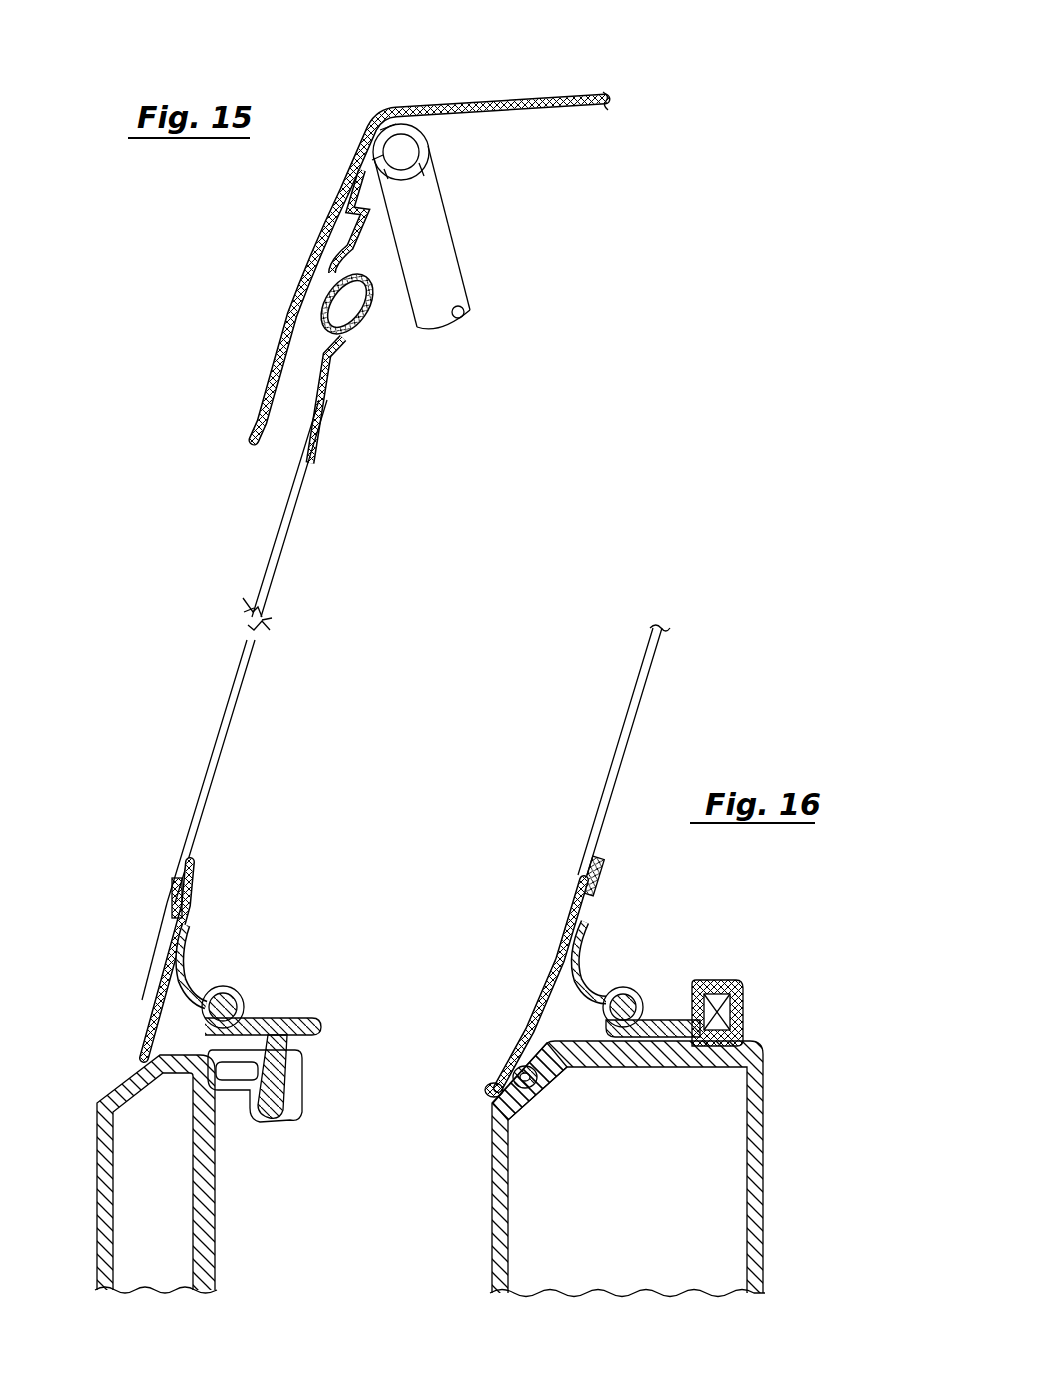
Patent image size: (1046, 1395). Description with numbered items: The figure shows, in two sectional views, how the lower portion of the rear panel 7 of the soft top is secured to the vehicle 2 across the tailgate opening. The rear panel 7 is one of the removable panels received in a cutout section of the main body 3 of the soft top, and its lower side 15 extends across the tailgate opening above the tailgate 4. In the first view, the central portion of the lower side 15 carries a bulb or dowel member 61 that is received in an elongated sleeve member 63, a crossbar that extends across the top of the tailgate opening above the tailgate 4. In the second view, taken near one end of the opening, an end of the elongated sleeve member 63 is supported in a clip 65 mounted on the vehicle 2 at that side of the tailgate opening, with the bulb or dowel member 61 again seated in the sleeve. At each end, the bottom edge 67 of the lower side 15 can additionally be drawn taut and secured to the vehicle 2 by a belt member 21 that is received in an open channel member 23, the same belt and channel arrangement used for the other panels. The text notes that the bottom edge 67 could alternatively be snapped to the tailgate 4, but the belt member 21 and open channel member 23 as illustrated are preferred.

In FIG. 16, the vehicle 2 is at (644, 1205).
In FIG. 15, the main body 3 is at (454, 100).
In FIG. 15, the tailgate 4 is at (97, 1195).
In FIG. 15, the rear panel 7 is at (205, 615).
In FIG. 16, the rear panel 7 is at (590, 766).
In FIG. 15, the lower side 15 is at (153, 993).
In FIG. 16, the lower side 15 is at (538, 1028).
In FIG. 16, the belt member 21 is at (530, 1097).
In FIG. 16, the open channel member 23 is at (530, 1064).
In FIG. 15, the bulb or dowel member 61 is at (211, 996).
In FIG. 16, the bulb or dowel member 61 is at (618, 992).
In FIG. 15, the elongated sleeve member 63 is at (254, 1003).
In FIG. 16, the elongated sleeve member 63 is at (643, 995).
In FIG. 16, the clip 65 is at (714, 980).
In FIG. 16, the bottom edge 67 is at (496, 1082).